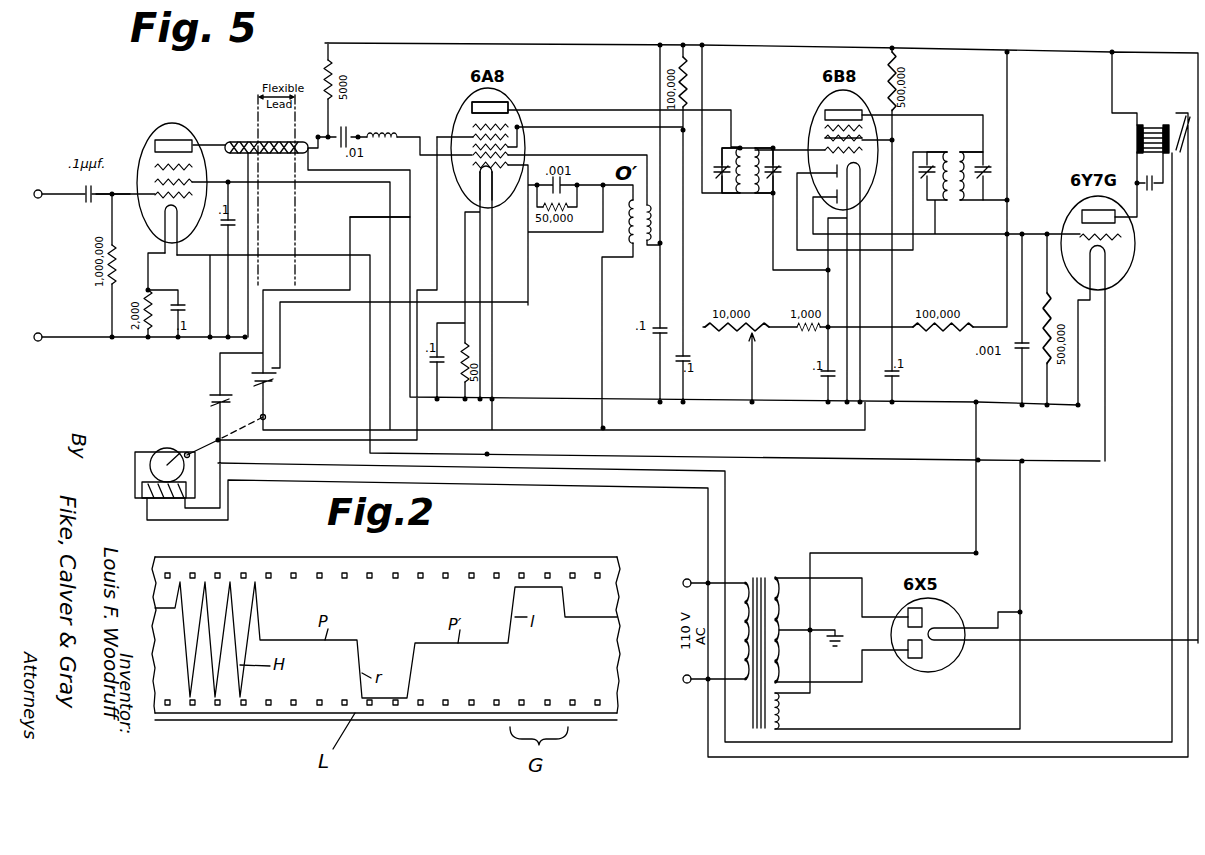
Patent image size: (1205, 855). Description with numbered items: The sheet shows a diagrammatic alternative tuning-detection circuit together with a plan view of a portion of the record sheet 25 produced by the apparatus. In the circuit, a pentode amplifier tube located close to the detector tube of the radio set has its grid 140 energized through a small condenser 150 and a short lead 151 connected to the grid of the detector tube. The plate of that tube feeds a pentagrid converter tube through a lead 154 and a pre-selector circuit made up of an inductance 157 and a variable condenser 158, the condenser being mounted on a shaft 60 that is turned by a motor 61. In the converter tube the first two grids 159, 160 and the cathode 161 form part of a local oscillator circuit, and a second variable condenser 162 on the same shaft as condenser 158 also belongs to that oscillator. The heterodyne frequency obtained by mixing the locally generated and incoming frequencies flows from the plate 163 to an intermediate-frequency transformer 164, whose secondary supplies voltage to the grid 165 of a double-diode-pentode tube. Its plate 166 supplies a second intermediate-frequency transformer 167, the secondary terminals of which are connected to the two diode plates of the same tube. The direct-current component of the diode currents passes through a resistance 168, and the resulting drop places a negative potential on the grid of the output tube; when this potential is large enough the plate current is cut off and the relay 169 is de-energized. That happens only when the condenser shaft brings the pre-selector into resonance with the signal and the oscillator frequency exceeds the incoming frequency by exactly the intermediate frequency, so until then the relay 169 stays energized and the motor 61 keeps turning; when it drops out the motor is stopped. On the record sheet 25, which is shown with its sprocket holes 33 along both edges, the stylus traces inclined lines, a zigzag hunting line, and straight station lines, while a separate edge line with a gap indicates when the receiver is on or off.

In FIG. 2, the record sheet 25 is at (278, 583).
In FIG. 2, the sprocket holes 33 is at (521, 576).
In FIG. 5, the shaft 60 is at (215, 440).
In FIG. 5, the motor 61 is at (165, 448).
In FIG. 5, the grid 140 is at (190, 197).
In FIG. 5, the condenser 150 is at (74, 210).
In FIG. 5, the lead 151 is at (113, 183).
In FIG. 5, the lead 154 is at (308, 152).
In FIG. 5, the inductance 157 is at (379, 135).
In FIG. 5, the variable condenser 158 is at (218, 393).
In FIG. 5, the first grid 159 is at (470, 174).
In FIG. 5, the second grid 160 is at (470, 137).
In FIG. 5, the cathode 161 is at (480, 188).
In FIG. 5, the second variable condenser 162 is at (278, 370).
In FIG. 5, the plate 163 is at (492, 108).
In FIG. 5, the intermediate-frequency transformer 164 is at (818, 150).
In FIG. 5, the grid 165 is at (835, 140).
In FIG. 5, the plate 166 is at (838, 112).
In FIG. 5, the second intermediate-frequency transformer 167 is at (950, 158).
In FIG. 5, the resistance 168 is at (1045, 297).
In FIG. 5, the relay 169 is at (1151, 125).